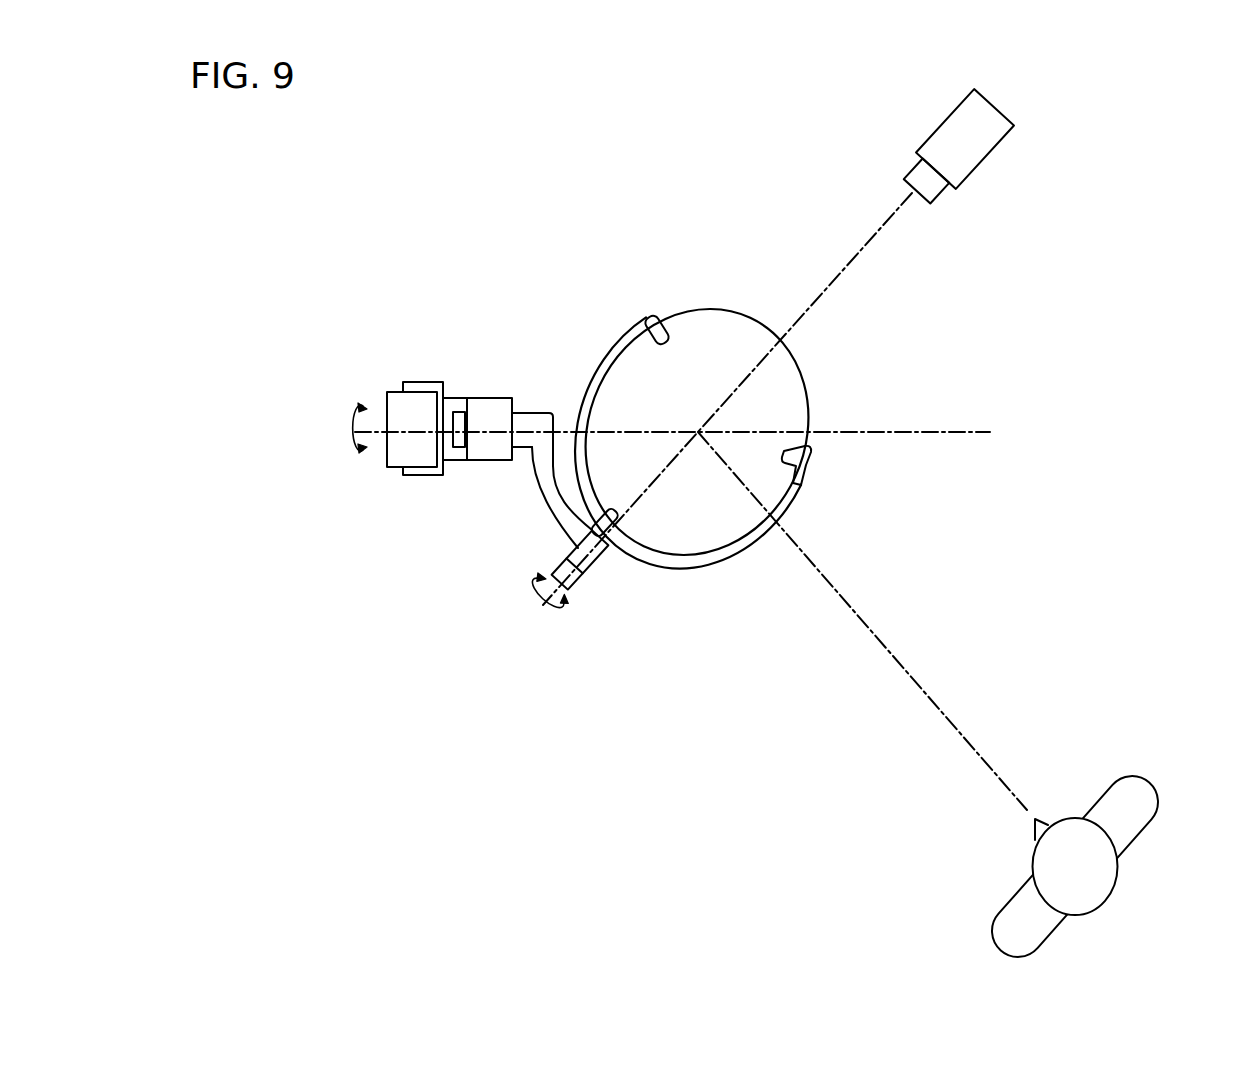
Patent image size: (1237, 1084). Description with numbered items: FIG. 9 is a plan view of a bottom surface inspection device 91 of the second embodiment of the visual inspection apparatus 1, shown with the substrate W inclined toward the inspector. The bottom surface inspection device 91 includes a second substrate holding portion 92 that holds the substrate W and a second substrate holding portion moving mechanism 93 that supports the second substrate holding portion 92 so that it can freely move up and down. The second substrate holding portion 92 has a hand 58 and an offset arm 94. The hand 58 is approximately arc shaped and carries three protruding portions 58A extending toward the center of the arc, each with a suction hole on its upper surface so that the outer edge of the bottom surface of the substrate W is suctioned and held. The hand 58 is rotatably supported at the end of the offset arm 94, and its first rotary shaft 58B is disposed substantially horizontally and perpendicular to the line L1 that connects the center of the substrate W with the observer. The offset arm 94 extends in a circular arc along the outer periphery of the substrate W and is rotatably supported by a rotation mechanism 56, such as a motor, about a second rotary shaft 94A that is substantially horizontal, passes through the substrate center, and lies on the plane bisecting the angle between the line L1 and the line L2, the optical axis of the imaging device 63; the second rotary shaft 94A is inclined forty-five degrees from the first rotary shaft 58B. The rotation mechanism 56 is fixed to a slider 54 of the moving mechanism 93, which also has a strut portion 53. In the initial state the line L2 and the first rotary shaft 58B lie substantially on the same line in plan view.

The visual inspection apparatus 1 is at (1142, 196).
The strut portion 53 is at (395, 450).
The slider 54 is at (421, 473).
The rotation mechanism 56 is at (487, 449).
The hand 58 is at (624, 330).
The protruding portions 58A is at (672, 308).
The first rotary shaft 58B is at (540, 618).
The imaging device 63 is at (973, 150).
The bottom surface inspection device 91 is at (556, 318).
The second substrate holding portion 92 is at (540, 405).
The second substrate holding portion moving mechanism 93 is at (383, 394).
The offset arm 94 is at (550, 493).
The second rotary shaft 94A is at (456, 397).
The substrate W is at (710, 318).
The line L1 is at (925, 705).
The line L2 is at (840, 277).